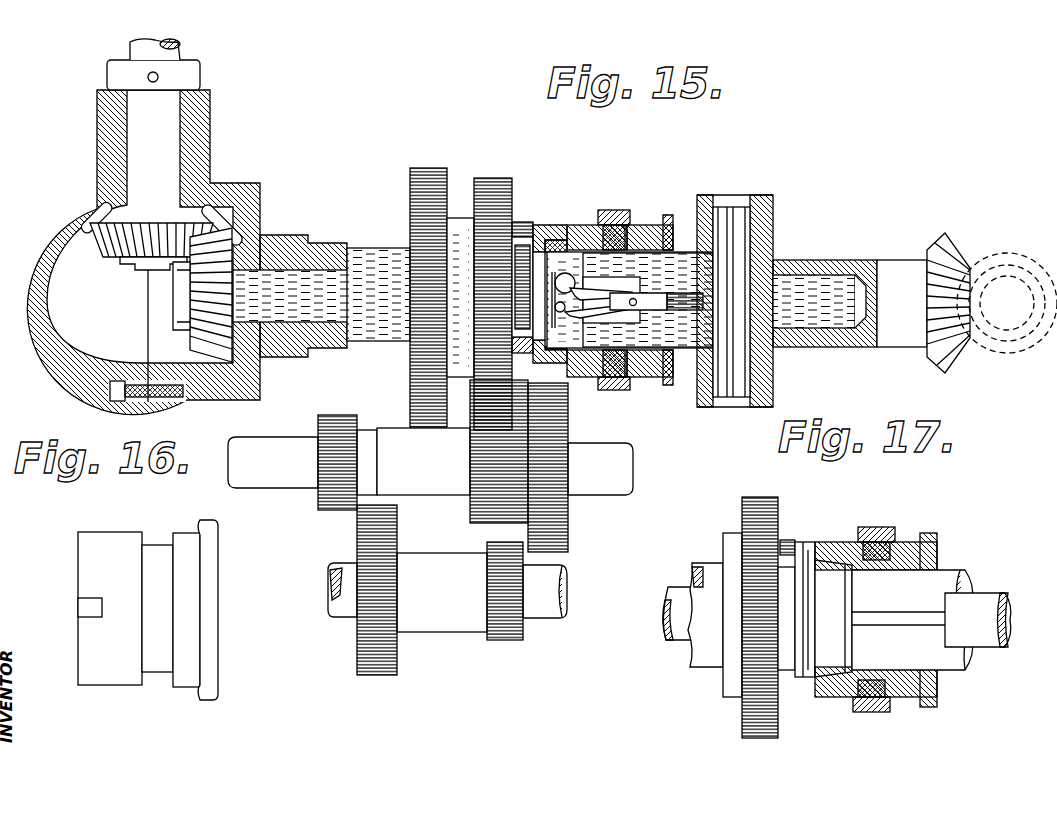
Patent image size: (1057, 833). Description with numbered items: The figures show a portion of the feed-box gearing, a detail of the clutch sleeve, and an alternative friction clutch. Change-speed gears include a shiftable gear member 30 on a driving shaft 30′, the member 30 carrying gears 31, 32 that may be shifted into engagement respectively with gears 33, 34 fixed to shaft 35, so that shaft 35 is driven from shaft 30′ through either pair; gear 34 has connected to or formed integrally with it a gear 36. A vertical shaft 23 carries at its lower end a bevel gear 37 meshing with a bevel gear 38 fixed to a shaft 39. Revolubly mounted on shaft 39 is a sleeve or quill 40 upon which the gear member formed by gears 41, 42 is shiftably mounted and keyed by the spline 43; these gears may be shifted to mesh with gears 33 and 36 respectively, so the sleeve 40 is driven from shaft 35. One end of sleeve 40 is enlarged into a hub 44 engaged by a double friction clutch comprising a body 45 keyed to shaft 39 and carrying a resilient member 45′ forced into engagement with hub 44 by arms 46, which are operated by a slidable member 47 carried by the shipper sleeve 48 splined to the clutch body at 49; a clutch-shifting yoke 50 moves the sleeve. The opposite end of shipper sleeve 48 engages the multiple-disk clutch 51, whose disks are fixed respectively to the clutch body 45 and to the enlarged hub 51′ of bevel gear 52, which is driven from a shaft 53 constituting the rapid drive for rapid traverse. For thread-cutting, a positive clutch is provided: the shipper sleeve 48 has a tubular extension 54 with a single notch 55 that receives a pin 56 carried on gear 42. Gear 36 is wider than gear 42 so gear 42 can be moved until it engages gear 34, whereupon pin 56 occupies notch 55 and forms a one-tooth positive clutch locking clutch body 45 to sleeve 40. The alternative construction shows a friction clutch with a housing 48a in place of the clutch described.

In FIG. 15, the vertical shaft 23 is at (172, 132).
In FIG. 15, the bevel gear 37 is at (110, 250).
In FIG. 15, the bevel gear 38 is at (177, 310).
In FIG. 15, the shaft 39 is at (272, 278).
In FIG. 17, the shaft 39 is at (680, 622).
In FIG. 15, the sleeve or quill 40 is at (362, 263).
In FIG. 17, the sleeve or quill 40 is at (710, 650).
In FIG. 15, the spline 43 is at (390, 247).
In FIG. 15, the gear 41 is at (427, 177).
In FIG. 15, the gear 42 is at (488, 177).
In FIG. 17, the gear 42 is at (757, 708).
In FIG. 15, the pin 56 is at (516, 220).
In FIG. 17, the pin 56 is at (785, 540).
In FIG. 15, the hub 44 is at (548, 232).
In FIG. 17, the hub 44 is at (833, 618).
In FIG. 15, the notch or pocket 55 is at (570, 225).
In FIG. 16, the notch or pocket 55 is at (88, 605).
In FIG. 17, the notch or pocket 55 is at (807, 547).
In FIG. 15, the tubular extension 54 is at (570, 232).
In FIG. 16, the tubular extension 54 is at (102, 542).
In FIG. 15, the shipper sleeve 48 is at (640, 232).
In FIG. 16, the shipper sleeve 48 is at (153, 557).
In FIG. 15, the spline 49 is at (669, 248).
In FIG. 15, the clutch-shifting yoke 50 is at (620, 210).
In FIG. 17, the clutch-shifting yoke 50 is at (880, 527).
In FIG. 15, the clutch body 45 is at (630, 345).
In FIG. 17, the clutch body 45 is at (931, 620).
In FIG. 15, the resilient member 45' is at (601, 436).
In FIG. 15, the arms 46 is at (588, 292).
In FIG. 15, the slidable member 47 is at (652, 310).
In FIG. 15, the multiple-disk clutch 51 is at (756, 301).
In FIG. 15, the enlarged hub 51' is at (762, 294).
In FIG. 15, the bevel gear 52 is at (935, 253).
In FIG. 15, the shaft 53 is at (999, 283).
In FIG. 15, the shaft 35 is at (432, 480).
In FIG. 15, the gear 33 is at (338, 488).
In FIG. 15, the gear 36 is at (490, 507).
In FIG. 15, the gear 34 is at (553, 507).
In FIG. 15, the shiftable gear member 30 is at (447, 611).
In FIG. 15, the driving shaft 30' is at (308, 585).
In FIG. 15, the gear 31 is at (365, 645).
In FIG. 15, the gear 32 is at (507, 638).
In FIG. 17, the housing 48a is at (910, 553).